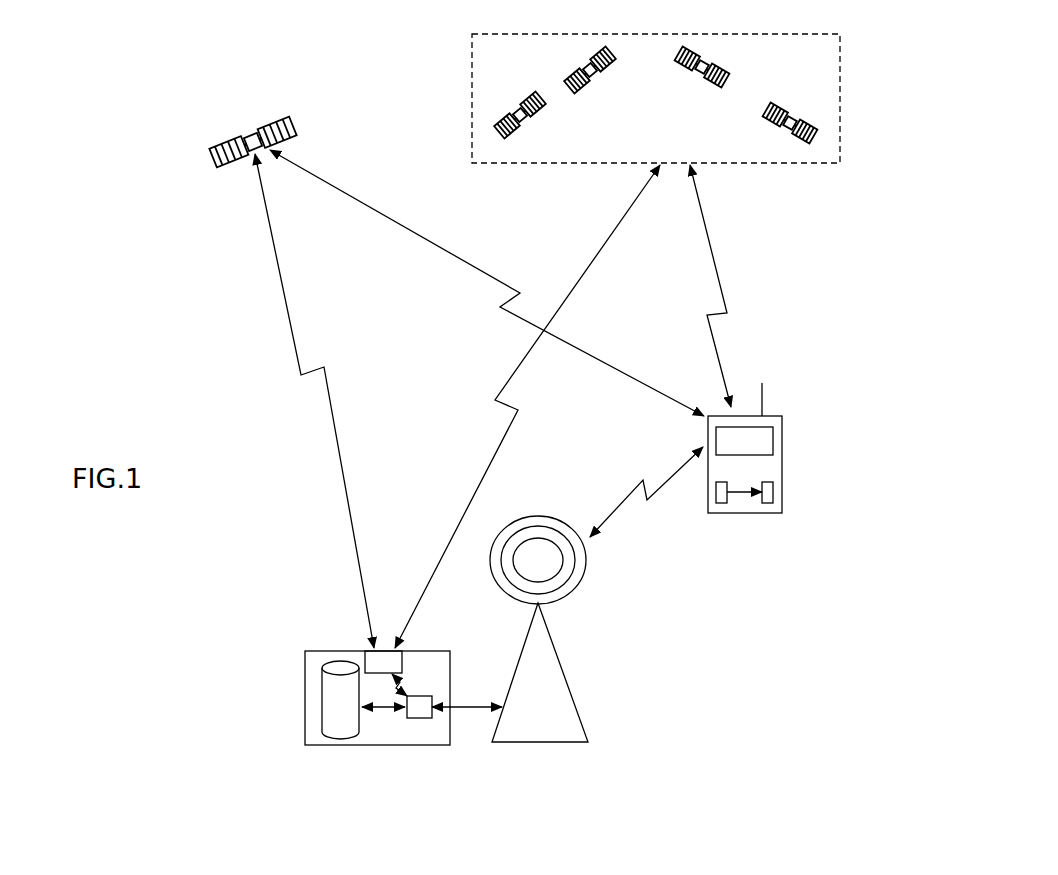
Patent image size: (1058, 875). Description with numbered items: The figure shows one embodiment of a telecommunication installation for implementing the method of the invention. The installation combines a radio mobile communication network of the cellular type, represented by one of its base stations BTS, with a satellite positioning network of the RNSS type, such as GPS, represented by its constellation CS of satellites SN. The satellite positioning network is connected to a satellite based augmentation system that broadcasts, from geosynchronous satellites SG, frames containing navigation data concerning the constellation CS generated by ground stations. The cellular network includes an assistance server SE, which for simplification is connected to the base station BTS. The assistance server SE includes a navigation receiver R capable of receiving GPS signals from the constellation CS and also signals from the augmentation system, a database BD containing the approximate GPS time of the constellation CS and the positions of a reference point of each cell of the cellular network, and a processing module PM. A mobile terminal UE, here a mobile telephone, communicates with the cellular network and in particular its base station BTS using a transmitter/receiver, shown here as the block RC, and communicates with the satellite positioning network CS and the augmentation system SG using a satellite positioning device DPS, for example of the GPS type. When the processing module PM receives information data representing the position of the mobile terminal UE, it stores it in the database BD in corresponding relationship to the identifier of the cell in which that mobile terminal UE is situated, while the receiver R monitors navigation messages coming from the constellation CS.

The geosynchronous satellites SG is at (255, 130).
The satellites SN is at (565, 62).
The constellation of satellites CS is at (577, 163).
The mobile terminal UE is at (782, 435).
The receiver circuit RC is at (723, 505).
The satellite positioning device DPS is at (770, 505).
The base station BTS is at (585, 717).
The assistance server SE is at (305, 723).
The database BD is at (322, 684).
The navigation receiver R is at (363, 662).
The processing module PM is at (413, 718).